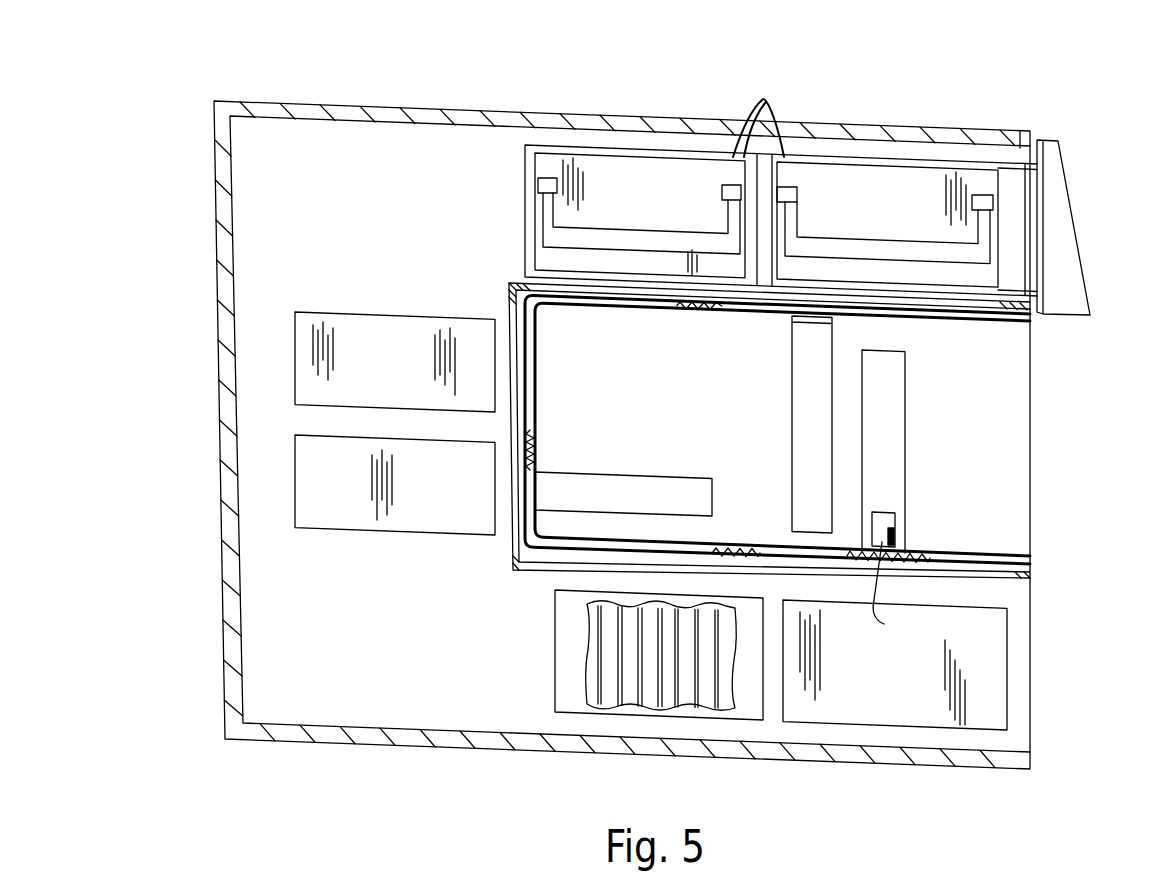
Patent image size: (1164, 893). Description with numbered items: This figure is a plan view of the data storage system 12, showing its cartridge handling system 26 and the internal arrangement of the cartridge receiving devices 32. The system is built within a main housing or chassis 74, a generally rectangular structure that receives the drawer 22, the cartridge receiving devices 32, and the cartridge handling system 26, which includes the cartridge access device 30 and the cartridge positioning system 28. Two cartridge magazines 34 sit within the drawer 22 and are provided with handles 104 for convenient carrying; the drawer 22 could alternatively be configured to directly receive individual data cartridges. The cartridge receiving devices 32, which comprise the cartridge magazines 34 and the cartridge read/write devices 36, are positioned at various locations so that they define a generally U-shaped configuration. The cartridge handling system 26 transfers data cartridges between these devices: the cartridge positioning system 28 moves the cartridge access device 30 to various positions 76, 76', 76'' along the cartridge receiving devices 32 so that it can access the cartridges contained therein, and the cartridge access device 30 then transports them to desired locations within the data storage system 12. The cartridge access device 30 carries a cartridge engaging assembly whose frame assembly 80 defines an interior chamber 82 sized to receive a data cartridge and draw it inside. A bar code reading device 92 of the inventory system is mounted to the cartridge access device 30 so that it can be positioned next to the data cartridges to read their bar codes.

The data storage system 12 is at (140, 62).
The drawer 22 is at (1074, 187).
The cartridge handling system 26 is at (1044, 428).
The cartridge positioning system 28 is at (1002, 550).
The cartridge access device 30 is at (922, 446).
The cartridge receiving devices 32 is at (538, 624).
The cartridge magazines 34 is at (802, 792).
The cartridge read/write devices 36 is at (322, 433).
The main housing 74 is at (302, 96).
The position 76 is at (921, 444).
The position 76' is at (623, 466).
The position 76'' is at (769, 424).
The frame assembly 80 is at (906, 405).
The interior chamber 82 is at (897, 595).
The bar code reading device 92 is at (893, 538).
The handles 104 is at (677, 228).